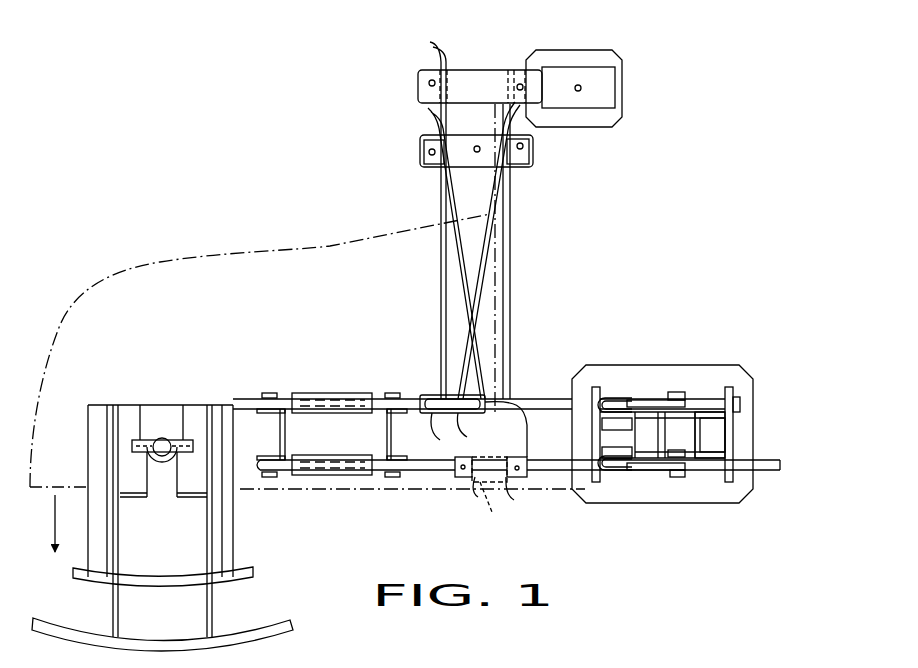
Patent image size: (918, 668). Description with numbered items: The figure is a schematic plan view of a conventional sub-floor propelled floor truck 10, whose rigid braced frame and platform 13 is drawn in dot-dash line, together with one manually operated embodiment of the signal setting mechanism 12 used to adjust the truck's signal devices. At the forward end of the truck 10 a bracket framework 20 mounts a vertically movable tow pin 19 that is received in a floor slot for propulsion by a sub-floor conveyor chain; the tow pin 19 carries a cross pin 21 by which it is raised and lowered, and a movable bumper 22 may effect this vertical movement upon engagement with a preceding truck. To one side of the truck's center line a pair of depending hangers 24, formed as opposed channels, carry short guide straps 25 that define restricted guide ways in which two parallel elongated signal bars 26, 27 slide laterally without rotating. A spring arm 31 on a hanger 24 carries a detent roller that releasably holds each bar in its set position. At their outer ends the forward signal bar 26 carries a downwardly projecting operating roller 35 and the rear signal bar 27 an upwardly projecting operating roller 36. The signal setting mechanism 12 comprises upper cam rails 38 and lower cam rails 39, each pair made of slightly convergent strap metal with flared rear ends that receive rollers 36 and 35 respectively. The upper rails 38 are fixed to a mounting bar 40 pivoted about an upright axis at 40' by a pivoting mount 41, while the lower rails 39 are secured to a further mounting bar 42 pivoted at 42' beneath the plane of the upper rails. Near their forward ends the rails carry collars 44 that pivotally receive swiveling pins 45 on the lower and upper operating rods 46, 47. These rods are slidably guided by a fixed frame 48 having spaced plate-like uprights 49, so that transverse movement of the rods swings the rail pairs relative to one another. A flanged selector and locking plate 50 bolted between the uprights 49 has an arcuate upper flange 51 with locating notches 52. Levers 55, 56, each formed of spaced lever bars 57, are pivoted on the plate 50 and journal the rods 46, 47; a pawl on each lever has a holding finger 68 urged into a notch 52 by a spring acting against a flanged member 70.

The floor truck 10 is at (229, 262).
The signal setting mechanism 12 is at (674, 364).
The frame and platform 13 is at (271, 252).
The tow pin 19 is at (165, 438).
The bracket framework 20 is at (140, 485).
The cross pin 21 is at (181, 453).
The movable bumper 22 is at (285, 621).
The hangers 24 is at (280, 437).
The guide straps 25 is at (270, 392).
The forward signal bar 26 is at (440, 472).
The rear signal bar 27 is at (392, 393).
The spring arm 31 is at (347, 414).
The operating roller 35 is at (497, 508).
The operating roller 36 is at (472, 456).
The upper cam rails 38 is at (478, 292).
The lower cam rails 39 is at (507, 342).
The mounting bar 40 is at (480, 70).
The pivot axis 40' is at (603, 86).
The pivoting mount 41 is at (597, 118).
The mounting bar 42 is at (488, 173).
The pivot axis 42' is at (470, 173).
The collar 44 is at (440, 396).
The swiveling pins 45 is at (420, 395).
The lower operating rod 46 is at (568, 471).
The upper operating rod 47 is at (532, 400).
The fixed frame 48 is at (596, 485).
The plate-like uprights 49 is at (735, 452).
The selector and locking plate 50 is at (712, 415).
The upper flange 51 is at (675, 448).
The locating notches 52 is at (662, 428).
The lever 55 is at (650, 484).
The lever 56 is at (644, 405).
The lever bars 57 is at (655, 400).
The holding finger 68 is at (619, 438).
The flanged member 70 is at (612, 395).